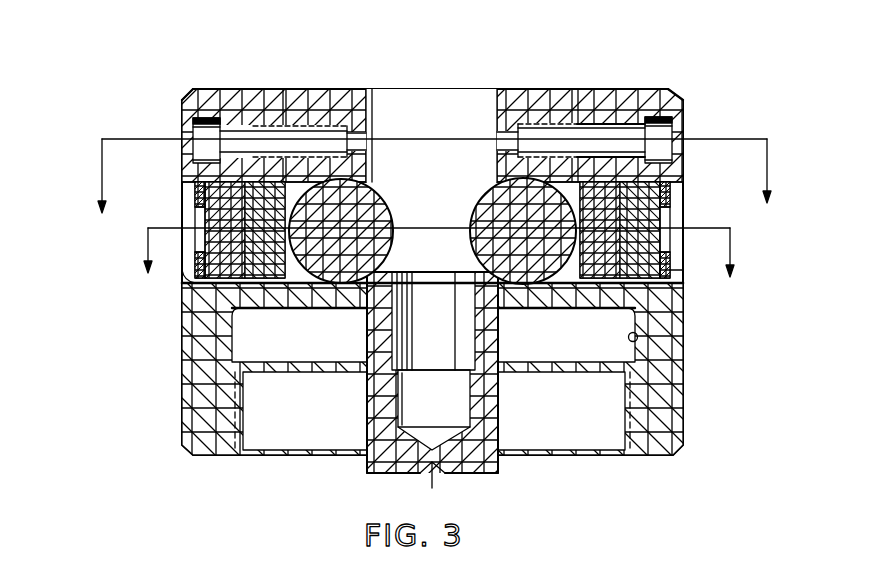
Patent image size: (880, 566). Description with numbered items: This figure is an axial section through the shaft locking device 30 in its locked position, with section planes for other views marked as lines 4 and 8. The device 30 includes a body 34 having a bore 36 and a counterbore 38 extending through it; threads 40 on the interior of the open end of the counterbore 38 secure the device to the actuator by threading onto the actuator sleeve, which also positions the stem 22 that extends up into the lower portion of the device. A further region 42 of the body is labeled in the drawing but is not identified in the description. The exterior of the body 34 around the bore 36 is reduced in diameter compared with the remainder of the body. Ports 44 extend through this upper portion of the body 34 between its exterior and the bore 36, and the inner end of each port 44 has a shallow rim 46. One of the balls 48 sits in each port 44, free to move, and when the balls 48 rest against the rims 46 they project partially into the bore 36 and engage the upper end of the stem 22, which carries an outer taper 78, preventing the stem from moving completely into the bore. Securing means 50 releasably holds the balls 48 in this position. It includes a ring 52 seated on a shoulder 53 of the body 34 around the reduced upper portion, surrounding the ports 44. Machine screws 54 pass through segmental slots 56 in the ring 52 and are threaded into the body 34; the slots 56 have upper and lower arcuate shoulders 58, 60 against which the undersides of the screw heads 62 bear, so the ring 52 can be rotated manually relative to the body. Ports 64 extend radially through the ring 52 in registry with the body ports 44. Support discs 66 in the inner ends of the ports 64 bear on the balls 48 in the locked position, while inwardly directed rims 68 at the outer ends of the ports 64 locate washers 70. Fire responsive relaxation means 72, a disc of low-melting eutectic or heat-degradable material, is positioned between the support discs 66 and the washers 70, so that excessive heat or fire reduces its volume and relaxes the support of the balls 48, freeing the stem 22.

The stem 22 is at (499, 466).
The shaft locking device 30 is at (113, 349).
The body 34 is at (182, 412).
The bore 36 is at (383, 90).
The counterbore 38 is at (637, 342).
The threads 40 is at (243, 420).
The left chamber 42 is at (268, 310).
The ports 44 is at (288, 181).
The shallow rim 46 is at (445, 247).
The balls 48 is at (473, 213).
The securing means 50 is at (118, 252).
The ring 52 is at (237, 89).
The shoulder 53 is at (673, 284).
The machine screws 54 is at (195, 133).
The segmental slots 56 is at (240, 158).
The upper arcuate shoulder 58 is at (208, 118).
The lower arcuate shoulder 60 is at (195, 166).
The heads 62 is at (193, 157).
The ports 64 is at (190, 285).
The support discs 66 is at (333, 308).
The inwardly directed rims 68 is at (679, 197).
The washers 70 is at (668, 208).
The fire responsive relaxation means 72 is at (650, 117).
The outer taper 78 is at (538, 302).
The section line 8- 8 is at (436, 193).
The section line 4- 4 is at (441, 264).